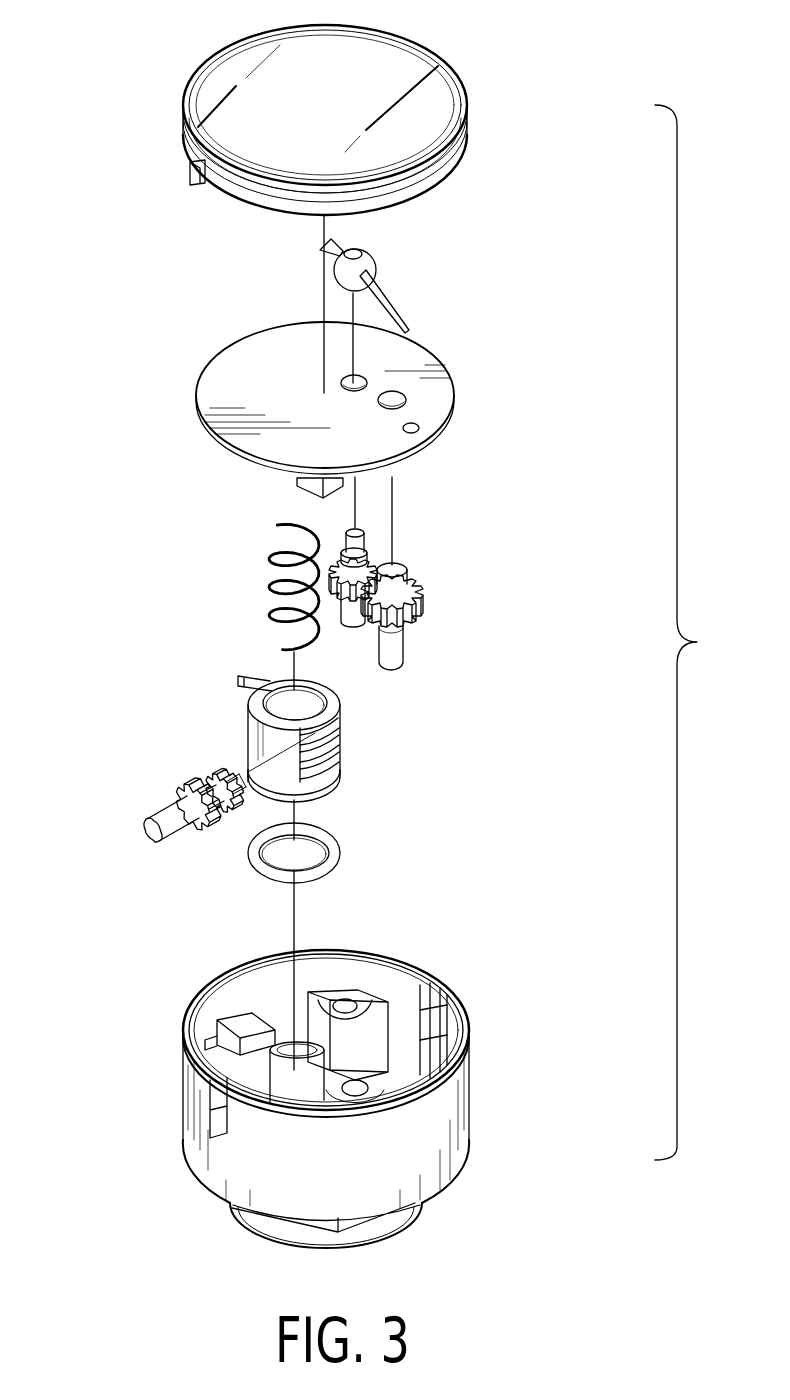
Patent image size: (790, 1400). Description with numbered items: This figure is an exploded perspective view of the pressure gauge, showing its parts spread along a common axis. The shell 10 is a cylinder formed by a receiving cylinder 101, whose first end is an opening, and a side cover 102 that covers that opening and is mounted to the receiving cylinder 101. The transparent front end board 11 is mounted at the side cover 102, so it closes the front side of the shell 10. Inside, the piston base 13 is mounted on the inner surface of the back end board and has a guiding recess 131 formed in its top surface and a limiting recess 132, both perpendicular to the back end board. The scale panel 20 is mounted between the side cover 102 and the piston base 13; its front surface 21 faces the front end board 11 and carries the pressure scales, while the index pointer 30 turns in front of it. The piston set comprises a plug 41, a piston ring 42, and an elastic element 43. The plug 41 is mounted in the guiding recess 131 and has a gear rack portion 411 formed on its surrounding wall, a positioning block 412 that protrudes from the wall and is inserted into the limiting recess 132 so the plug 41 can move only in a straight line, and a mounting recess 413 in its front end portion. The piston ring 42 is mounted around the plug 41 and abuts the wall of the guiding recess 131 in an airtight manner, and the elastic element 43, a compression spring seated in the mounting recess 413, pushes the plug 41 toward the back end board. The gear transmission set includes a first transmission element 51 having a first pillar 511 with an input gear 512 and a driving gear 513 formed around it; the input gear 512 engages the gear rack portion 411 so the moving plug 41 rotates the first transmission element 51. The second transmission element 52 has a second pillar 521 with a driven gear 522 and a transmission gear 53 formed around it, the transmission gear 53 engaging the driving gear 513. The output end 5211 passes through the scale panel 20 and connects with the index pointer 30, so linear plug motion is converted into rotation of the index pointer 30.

The shell 10 is at (503, 86).
The front end board 11 is at (390, 72).
The side cover 102 is at (425, 172).
The scale panel 20 is at (225, 446).
The front surface 21 is at (248, 350).
The index pointer 30 is at (395, 300).
The elastic element 43 is at (270, 560).
The second transmission element 52 is at (429, 592).
The output end 5211 is at (364, 540).
The driven gear 522 is at (422, 592).
The transmission gear 53 is at (408, 612).
The second pillar 521 is at (398, 648).
The plug 41 is at (291, 712).
The positioning block 412 is at (247, 682).
The mounting recess 413 is at (318, 703).
The gear rack portion 411 is at (337, 745).
The first transmission element 51 is at (165, 824).
The first pillar 511 is at (173, 835).
The input gear 512 is at (203, 832).
The driving gear 513 is at (215, 770).
The piston ring 42 is at (333, 853).
The piston base 13 is at (273, 1007).
The guiding recess 131 is at (303, 1070).
The limiting recess 132 is at (217, 1044).
The receiving cylinder 101 is at (445, 1107).